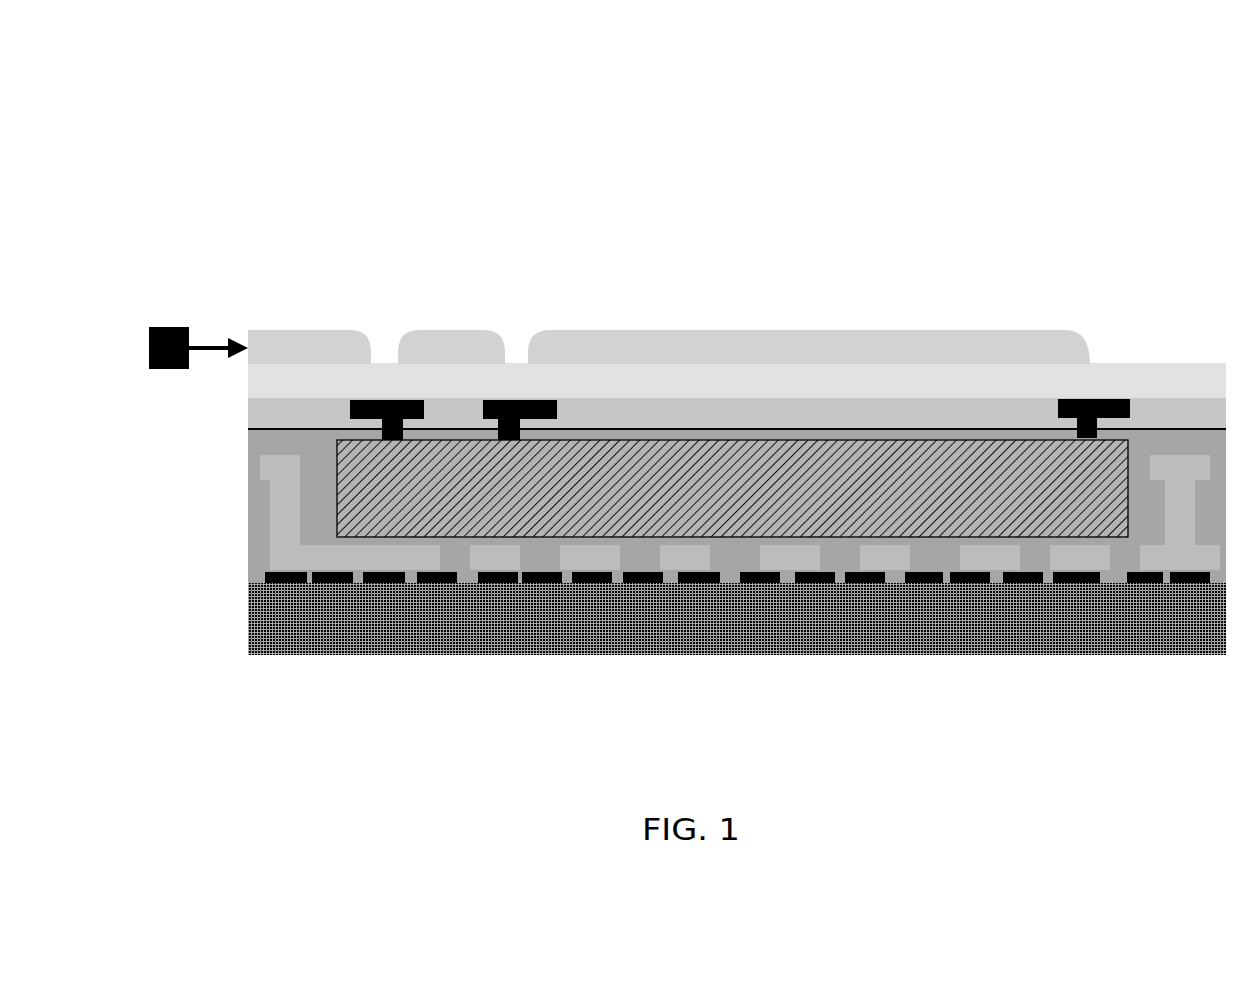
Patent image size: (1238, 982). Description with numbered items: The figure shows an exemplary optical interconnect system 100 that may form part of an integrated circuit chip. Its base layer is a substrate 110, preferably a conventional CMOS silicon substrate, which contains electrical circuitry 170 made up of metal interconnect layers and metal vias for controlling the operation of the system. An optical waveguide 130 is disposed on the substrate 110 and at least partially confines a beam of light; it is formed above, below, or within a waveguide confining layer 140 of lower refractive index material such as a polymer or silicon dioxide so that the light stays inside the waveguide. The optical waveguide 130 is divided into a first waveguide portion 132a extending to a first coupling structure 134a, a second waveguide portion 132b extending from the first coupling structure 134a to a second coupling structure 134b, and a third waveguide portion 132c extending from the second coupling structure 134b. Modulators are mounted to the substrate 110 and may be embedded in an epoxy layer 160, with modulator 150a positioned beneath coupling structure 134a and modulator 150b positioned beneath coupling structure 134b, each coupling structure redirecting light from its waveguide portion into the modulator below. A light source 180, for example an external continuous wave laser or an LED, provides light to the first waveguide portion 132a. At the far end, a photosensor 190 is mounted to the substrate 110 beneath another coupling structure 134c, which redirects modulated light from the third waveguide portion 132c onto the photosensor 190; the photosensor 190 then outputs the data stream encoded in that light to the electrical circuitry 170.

The optical interconnect system 100 is at (135, 66).
The substrate 110 is at (245, 428).
The optical waveguide 130 is at (669, 266).
The first waveguide portion 132a is at (277, 332).
The second waveguide portion 132b is at (447, 327).
The third waveguide portion 132c is at (900, 332).
The first coupling structure 134a is at (418, 327).
The second coupling structure 134b is at (552, 327).
The coupling structure 134c is at (1068, 335).
The waveguide confining layer 140 is at (737, 311).
The modulator 150a is at (358, 417).
The modulator 150b is at (490, 417).
The epoxy layer 160 is at (737, 354).
The electrical circuitry 170 is at (650, 381).
The light source 180 is at (155, 322).
The photosensor 190 is at (1068, 418).